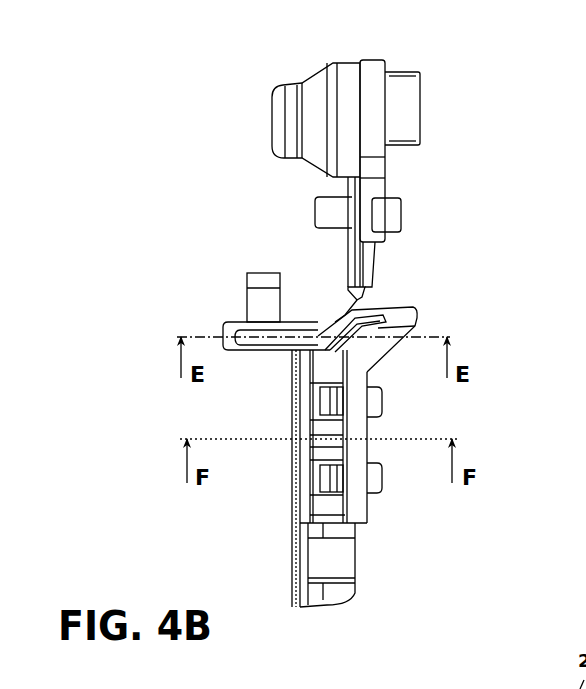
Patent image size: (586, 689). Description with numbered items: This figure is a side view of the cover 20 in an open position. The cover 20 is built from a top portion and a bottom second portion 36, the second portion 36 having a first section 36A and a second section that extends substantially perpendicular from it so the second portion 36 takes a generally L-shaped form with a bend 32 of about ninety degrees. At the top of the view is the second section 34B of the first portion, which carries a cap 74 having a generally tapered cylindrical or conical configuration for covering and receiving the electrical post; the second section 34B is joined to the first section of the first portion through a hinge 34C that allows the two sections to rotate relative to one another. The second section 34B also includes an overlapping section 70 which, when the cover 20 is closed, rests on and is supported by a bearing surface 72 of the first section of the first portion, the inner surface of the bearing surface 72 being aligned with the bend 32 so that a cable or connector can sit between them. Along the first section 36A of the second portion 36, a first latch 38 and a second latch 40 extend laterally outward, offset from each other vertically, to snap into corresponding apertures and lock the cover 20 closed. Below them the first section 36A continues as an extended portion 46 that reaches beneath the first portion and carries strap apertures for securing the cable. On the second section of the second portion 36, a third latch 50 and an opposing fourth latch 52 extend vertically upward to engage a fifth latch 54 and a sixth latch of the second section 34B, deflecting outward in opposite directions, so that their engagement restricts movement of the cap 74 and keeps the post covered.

The cover 20 is at (468, 85).
The bend 32 is at (413, 328).
The second section of the first portion 34B is at (448, 162).
The hinge 34C is at (350, 288).
The second portion 36 is at (475, 688).
The first section of the second portion 36A is at (383, 582).
The first latch 38 is at (327, 496).
The second latch 40 is at (332, 413).
The extended portion 46 is at (290, 565).
The third latch 50 is at (250, 282).
The fourth latch 52 is at (276, 336).
The fifth latch 54 is at (315, 212).
The overlapping section 70 is at (382, 277).
The bearing surface 72 is at (393, 303).
The cap 74 is at (272, 117).